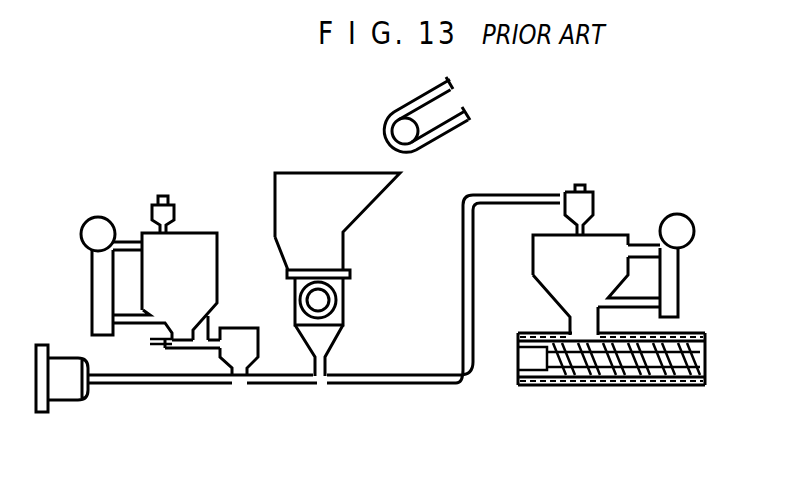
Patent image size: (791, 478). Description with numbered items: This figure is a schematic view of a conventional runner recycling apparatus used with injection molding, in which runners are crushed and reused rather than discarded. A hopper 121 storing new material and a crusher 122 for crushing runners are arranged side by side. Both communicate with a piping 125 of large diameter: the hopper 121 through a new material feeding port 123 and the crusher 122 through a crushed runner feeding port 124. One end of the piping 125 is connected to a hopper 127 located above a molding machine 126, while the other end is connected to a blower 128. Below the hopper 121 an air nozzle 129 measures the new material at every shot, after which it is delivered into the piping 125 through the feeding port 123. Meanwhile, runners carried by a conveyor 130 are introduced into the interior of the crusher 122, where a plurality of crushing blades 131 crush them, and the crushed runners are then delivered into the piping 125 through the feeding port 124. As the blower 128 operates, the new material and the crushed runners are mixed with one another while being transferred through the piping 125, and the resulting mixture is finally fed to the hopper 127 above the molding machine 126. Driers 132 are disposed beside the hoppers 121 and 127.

The hopper 121 is at (205, 267).
The crusher 122 is at (345, 287).
The new material feeding port 123 is at (210, 325).
The crushed runner feeding port 124 is at (323, 368).
The piping 125 is at (408, 378).
The molding machine 126 is at (613, 387).
The hopper 127 is at (533, 252).
The blower 128 is at (63, 390).
The air nozzle 129 is at (158, 345).
The conveyor 130 is at (465, 118).
The crushing blades 131 is at (337, 297).
The driers 132 is at (98, 270).